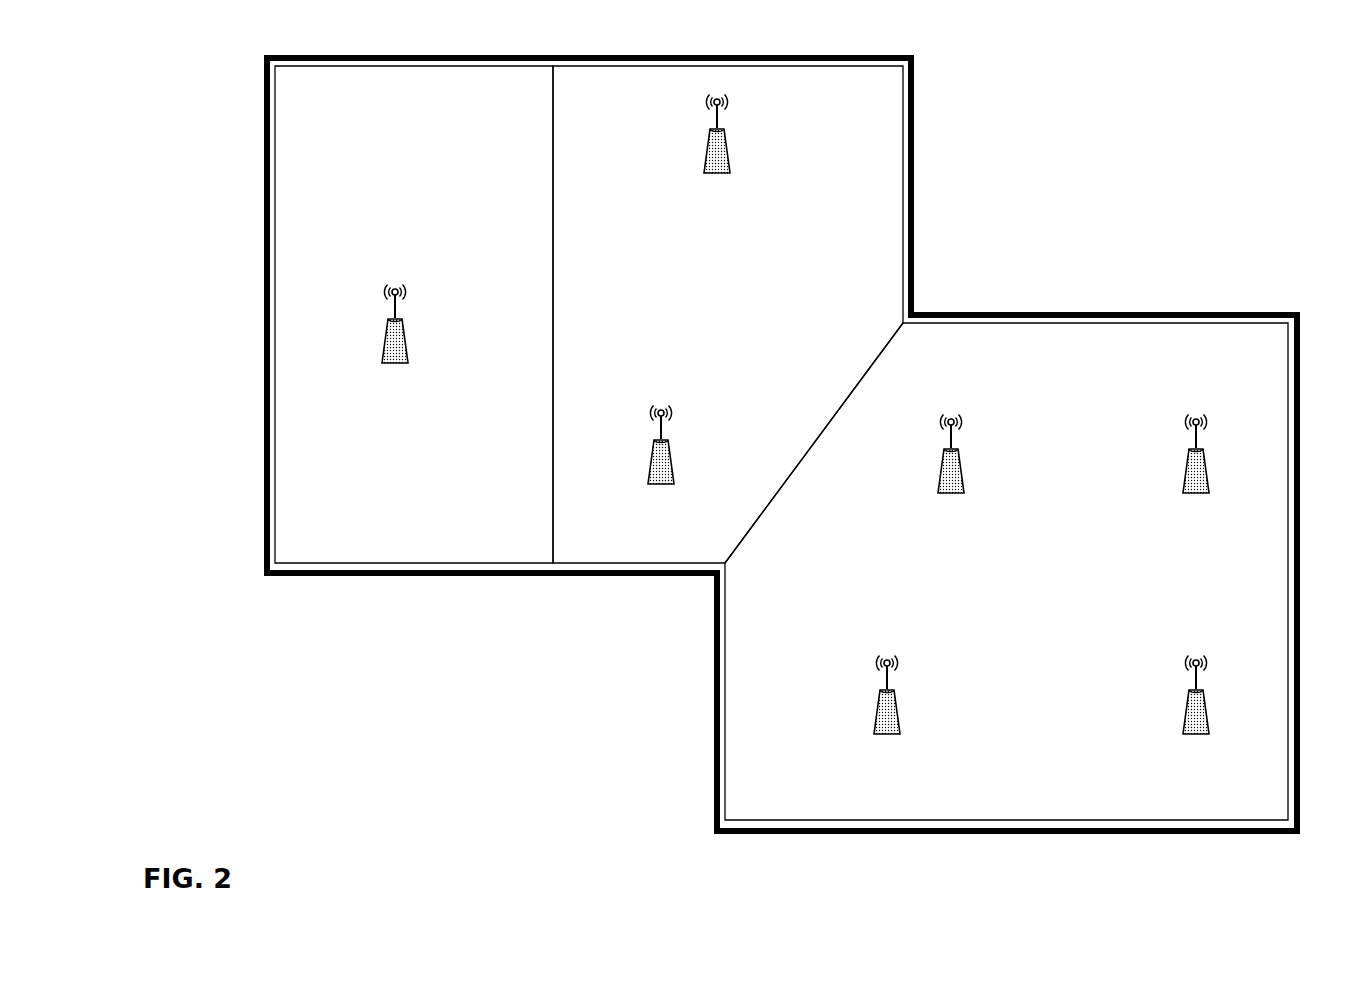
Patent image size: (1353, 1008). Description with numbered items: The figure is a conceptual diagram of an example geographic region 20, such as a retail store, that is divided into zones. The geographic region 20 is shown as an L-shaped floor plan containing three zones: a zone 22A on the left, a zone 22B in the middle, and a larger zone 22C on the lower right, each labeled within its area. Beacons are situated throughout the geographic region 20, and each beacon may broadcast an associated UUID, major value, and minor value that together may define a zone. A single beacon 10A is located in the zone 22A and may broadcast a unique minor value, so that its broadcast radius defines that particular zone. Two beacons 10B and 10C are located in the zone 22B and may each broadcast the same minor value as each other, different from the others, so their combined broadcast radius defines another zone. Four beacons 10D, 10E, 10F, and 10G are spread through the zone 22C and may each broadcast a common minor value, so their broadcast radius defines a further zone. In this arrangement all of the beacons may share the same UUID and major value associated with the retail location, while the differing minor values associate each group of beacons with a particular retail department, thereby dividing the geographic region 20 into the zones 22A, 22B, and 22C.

The geographic region 20 is at (913, 93).
The zone 22A is at (432, 265).
The zone 22B is at (752, 265).
The zone 22C is at (1076, 605).
The beacon 10A is at (405, 336).
The beacon 10B is at (671, 457).
The beacon 10C is at (727, 146).
The beacon 10D is at (897, 707).
The beacon 10E is at (961, 466).
The beacon 10F is at (1206, 707).
The beacon 10G is at (1206, 466).